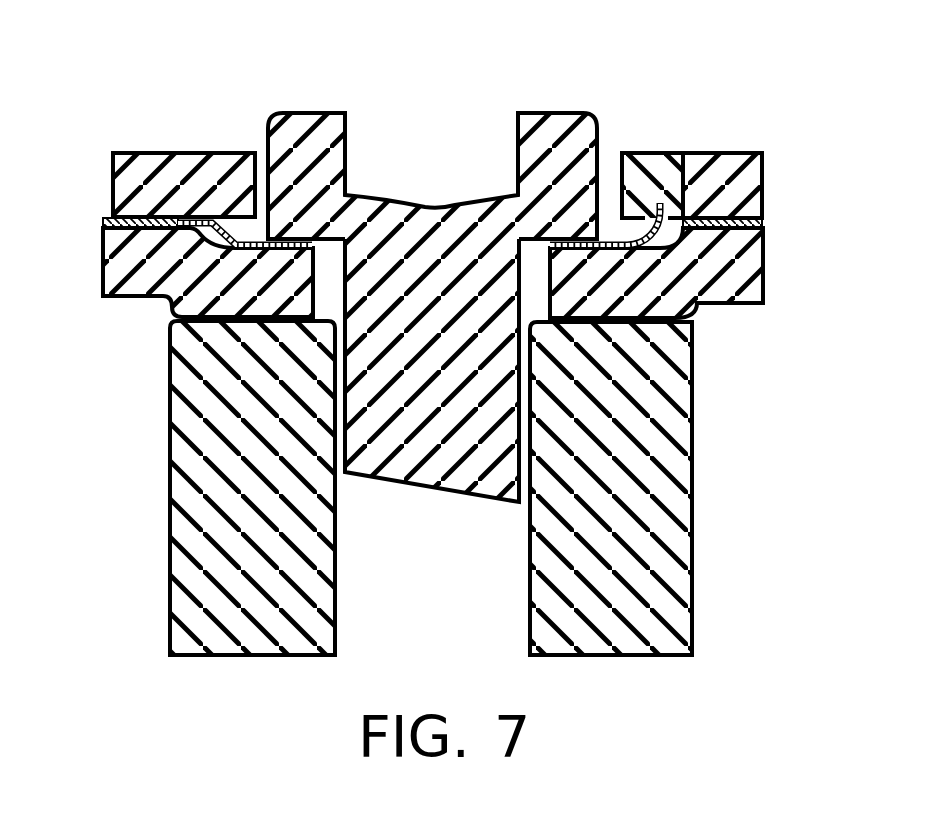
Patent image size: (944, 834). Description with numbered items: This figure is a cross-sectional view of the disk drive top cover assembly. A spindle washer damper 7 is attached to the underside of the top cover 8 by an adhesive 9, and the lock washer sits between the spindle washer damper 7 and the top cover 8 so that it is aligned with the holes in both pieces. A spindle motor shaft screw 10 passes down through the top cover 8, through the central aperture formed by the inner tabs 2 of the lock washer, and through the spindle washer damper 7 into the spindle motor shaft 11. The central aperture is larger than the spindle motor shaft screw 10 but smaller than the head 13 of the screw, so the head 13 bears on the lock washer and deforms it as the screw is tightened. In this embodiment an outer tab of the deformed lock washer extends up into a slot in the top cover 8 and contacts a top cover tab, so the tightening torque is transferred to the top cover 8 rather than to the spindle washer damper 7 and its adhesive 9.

The inner tabs 2 is at (662, 203).
The spindle washer damper 7 is at (118, 300).
The top cover 8 is at (172, 152).
The adhesive 9 is at (105, 222).
The spindle motor shaft screw 10 is at (440, 495).
The spindle motor shaft 11 is at (172, 572).
The head of the spindle motor shaft screw 13 is at (540, 113).